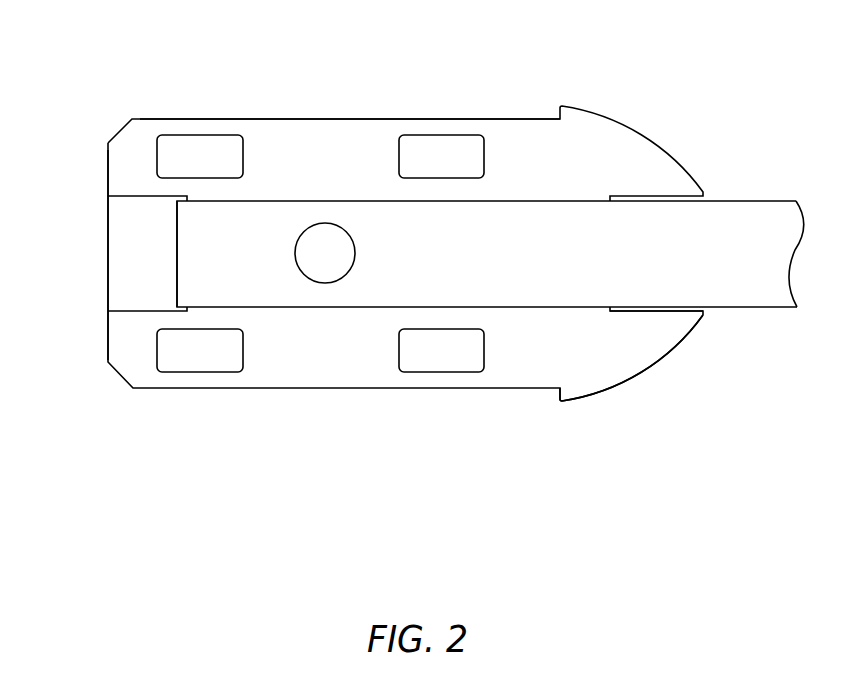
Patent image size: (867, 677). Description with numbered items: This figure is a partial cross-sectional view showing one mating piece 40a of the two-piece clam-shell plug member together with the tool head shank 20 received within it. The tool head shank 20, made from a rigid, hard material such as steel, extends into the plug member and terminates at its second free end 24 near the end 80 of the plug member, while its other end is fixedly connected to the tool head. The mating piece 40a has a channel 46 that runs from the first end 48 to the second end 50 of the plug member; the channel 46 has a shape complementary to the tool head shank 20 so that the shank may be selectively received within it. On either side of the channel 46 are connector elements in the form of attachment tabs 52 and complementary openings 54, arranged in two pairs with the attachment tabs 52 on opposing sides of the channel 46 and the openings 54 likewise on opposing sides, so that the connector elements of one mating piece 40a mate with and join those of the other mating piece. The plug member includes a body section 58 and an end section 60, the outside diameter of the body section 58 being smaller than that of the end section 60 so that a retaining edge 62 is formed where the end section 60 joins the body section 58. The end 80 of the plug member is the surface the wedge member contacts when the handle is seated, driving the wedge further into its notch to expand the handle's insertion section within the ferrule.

The tool head shank 20 is at (753, 212).
The second free end 24 is at (203, 260).
The mating piece 40a is at (273, 118).
The channel 46 is at (124, 219).
The first end 48 is at (711, 310).
The second end 50 is at (107, 249).
The attachment tabs 52 is at (202, 148).
The openings 54 is at (465, 152).
The body section 58 is at (368, 118).
The end section 60 is at (648, 380).
The retaining edge 62 is at (557, 395).
The end 80 is at (107, 337).